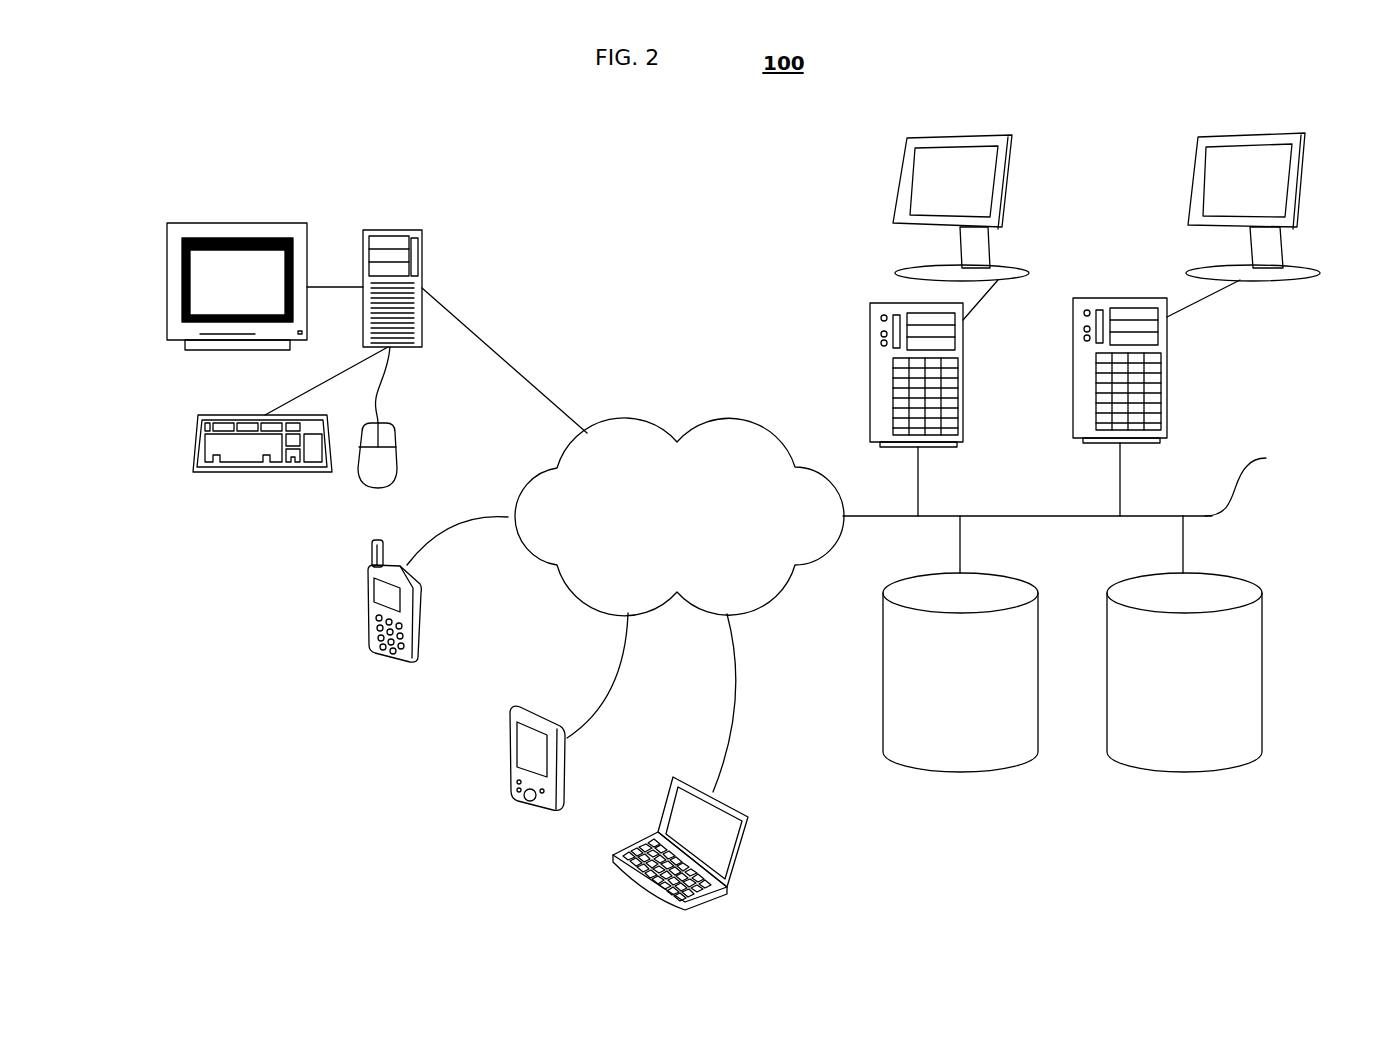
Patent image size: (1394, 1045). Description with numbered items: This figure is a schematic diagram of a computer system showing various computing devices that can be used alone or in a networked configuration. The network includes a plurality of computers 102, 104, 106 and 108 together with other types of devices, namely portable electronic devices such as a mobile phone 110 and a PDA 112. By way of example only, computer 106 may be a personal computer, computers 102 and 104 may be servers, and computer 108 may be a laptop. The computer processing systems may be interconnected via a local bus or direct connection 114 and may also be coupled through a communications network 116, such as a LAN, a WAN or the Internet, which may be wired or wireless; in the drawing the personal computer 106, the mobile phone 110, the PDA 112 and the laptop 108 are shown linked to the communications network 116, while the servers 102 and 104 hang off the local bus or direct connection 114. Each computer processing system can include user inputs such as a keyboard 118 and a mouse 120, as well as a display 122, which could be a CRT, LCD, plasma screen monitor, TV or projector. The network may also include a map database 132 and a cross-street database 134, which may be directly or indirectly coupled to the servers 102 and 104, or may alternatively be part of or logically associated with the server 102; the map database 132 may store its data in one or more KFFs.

The computer 102 is at (870, 333).
The computer 104 is at (1167, 377).
The computer 106 is at (423, 238).
The computer 108 is at (613, 858).
The mobile phone 110 is at (360, 623).
The PDA 112 is at (511, 792).
The local bus or direct connection 114 is at (1078, 478).
The communications network 116 is at (662, 425).
The keyboard 118 is at (198, 437).
The mouse 120 is at (397, 448).
The display 122 is at (167, 280).
The map database 132 is at (973, 772).
The cross-street database 134 is at (1262, 687).